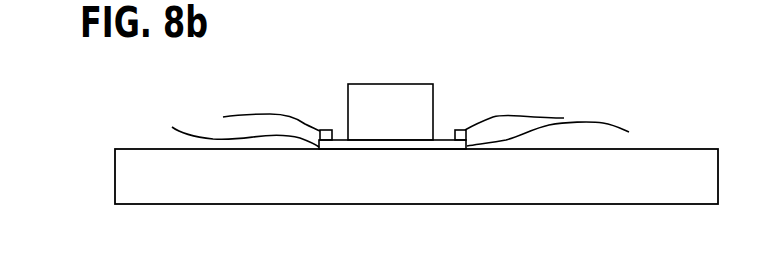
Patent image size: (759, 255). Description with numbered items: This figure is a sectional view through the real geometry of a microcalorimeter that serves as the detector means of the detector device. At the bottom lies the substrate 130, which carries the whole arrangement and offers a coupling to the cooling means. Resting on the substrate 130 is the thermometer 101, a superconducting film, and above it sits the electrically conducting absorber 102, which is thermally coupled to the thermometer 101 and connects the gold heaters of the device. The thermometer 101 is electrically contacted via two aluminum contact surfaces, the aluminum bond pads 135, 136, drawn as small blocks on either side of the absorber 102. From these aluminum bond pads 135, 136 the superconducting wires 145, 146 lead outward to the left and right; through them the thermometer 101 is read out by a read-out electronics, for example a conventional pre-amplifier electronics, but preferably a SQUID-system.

The substrate 130 is at (125, 183).
The absorber 102 is at (398, 102).
The aluminum bond pad 135 is at (324, 130).
The aluminum bond pad 136 is at (560, 132).
The thermometer 101 is at (225, 130).
The superconducting wire 145 is at (235, 112).
The superconducting wire 146 is at (528, 102).